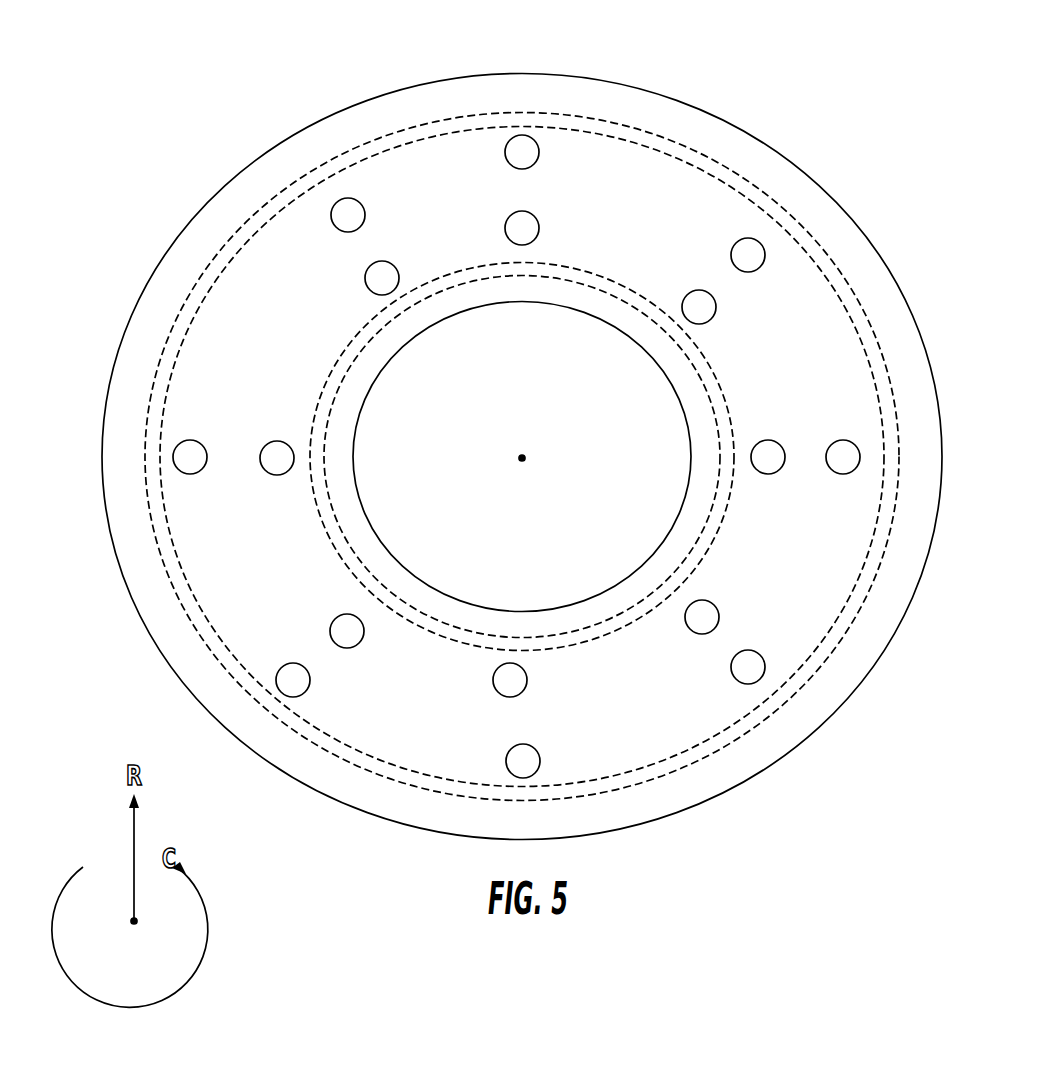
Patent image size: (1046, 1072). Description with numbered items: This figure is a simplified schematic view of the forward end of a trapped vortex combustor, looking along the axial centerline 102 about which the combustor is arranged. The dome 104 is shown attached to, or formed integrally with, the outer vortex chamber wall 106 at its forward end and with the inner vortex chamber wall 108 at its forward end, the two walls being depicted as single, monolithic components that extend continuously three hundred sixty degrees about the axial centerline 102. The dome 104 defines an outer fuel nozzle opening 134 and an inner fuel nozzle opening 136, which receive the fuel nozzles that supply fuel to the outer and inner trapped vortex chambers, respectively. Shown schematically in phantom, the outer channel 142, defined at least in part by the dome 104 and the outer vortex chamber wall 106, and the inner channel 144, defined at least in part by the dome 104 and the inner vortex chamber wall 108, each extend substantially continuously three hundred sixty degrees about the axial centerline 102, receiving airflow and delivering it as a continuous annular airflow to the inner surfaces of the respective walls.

The axial centerline 102 is at (522, 458).
The dome 104 is at (258, 330).
The outer vortex chamber wall 106 is at (382, 93).
The inner vortex chamber wall 108 is at (368, 488).
The outer fuel nozzle opening 134 is at (546, 143).
The inner fuel nozzle opening 136 is at (518, 245).
The outer channel 142 is at (481, 104).
The inner channel 144 is at (607, 612).